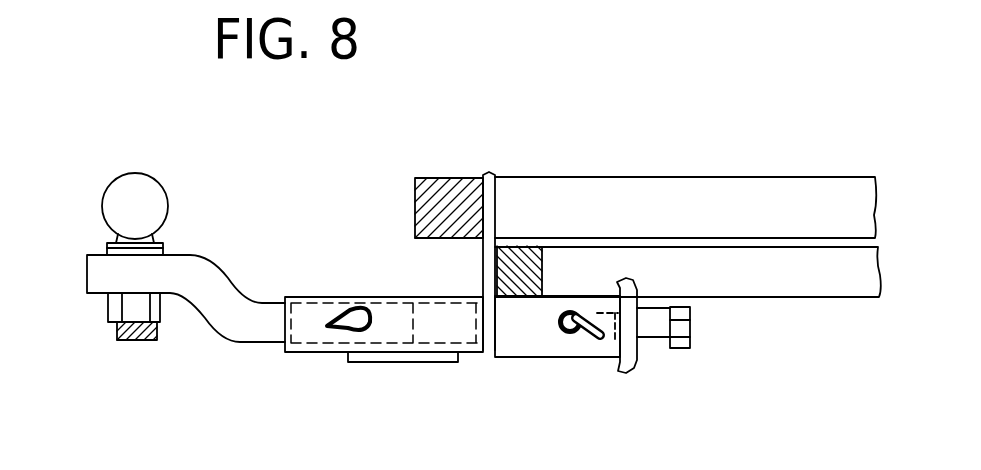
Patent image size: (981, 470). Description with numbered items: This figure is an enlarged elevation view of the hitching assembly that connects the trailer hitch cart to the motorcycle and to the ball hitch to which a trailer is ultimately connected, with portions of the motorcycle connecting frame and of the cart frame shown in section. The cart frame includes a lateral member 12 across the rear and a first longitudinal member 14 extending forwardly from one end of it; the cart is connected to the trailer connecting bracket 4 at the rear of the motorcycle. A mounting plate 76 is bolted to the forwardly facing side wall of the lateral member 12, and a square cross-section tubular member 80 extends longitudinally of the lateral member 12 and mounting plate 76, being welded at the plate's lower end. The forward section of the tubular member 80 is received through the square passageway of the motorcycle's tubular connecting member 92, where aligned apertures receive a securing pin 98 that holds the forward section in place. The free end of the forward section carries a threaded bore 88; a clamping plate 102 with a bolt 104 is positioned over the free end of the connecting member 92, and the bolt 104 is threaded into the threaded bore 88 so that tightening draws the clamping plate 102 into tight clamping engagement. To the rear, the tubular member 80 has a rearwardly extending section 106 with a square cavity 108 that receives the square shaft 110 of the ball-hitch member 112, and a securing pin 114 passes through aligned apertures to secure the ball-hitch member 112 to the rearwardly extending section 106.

The trailer connecting bracket 4 is at (790, 285).
The lateral member 12 is at (413, 207).
The first longitudinal member 14 is at (655, 177).
The mounting plate 76 is at (487, 173).
The tubular member 80 is at (340, 297).
The threaded bore 88 is at (617, 332).
The tubular connecting member 92 is at (515, 342).
The securing pin 98 is at (587, 342).
The clamping plate 102 is at (632, 372).
The bolt 104 is at (683, 352).
The rearwardly extending section 106 is at (318, 353).
The cavity 108 is at (436, 326).
The shaft 110 is at (265, 332).
The ball-hitch member 112 is at (115, 178).
The securing pin 114 is at (327, 325).